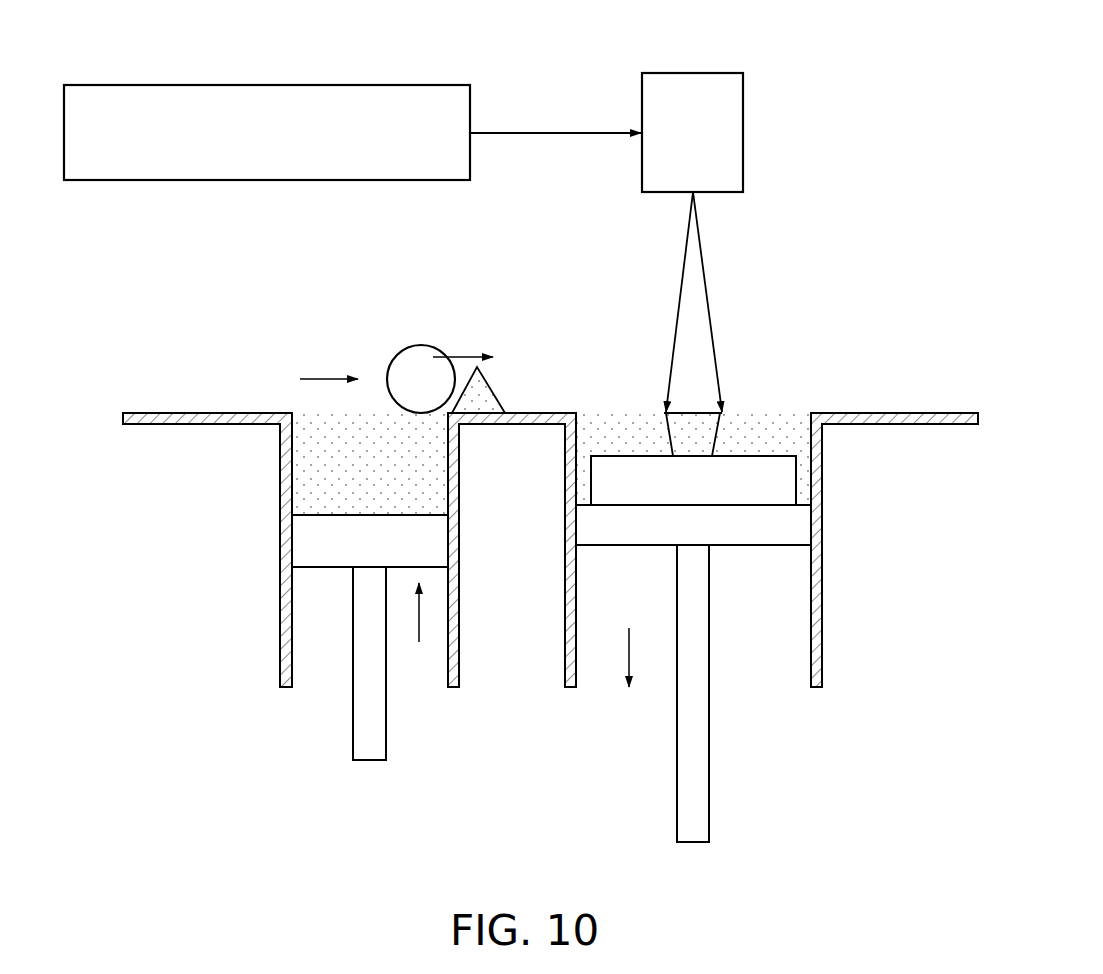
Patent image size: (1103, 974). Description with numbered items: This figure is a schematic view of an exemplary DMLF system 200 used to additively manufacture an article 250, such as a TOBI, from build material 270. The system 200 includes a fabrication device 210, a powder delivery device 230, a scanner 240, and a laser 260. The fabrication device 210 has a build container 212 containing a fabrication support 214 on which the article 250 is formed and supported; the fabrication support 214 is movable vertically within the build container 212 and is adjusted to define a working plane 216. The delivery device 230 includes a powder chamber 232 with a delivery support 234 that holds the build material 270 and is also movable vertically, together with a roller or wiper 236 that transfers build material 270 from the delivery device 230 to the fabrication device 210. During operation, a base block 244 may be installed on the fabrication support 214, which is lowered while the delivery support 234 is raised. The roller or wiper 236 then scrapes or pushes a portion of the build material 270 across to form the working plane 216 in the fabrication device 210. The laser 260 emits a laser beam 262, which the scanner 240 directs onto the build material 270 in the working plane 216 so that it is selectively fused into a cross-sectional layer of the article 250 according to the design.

The DMLF system 200 is at (877, 96).
The fabrication device 210 is at (777, 600).
The build container 212 is at (818, 440).
The fabrication support 214 is at (760, 547).
The working plane 216 is at (787, 418).
The powder delivery device 230 is at (323, 524).
The powder chamber 232 is at (285, 478).
The delivery support 234 is at (300, 538).
The roller or wiper 236 is at (422, 345).
The scanner 240 is at (695, 73).
The base block 244 is at (633, 495).
The article 250 is at (652, 410).
The laser 260 is at (273, 85).
The laser beam 262 is at (558, 131).
The build material 270 is at (302, 455).